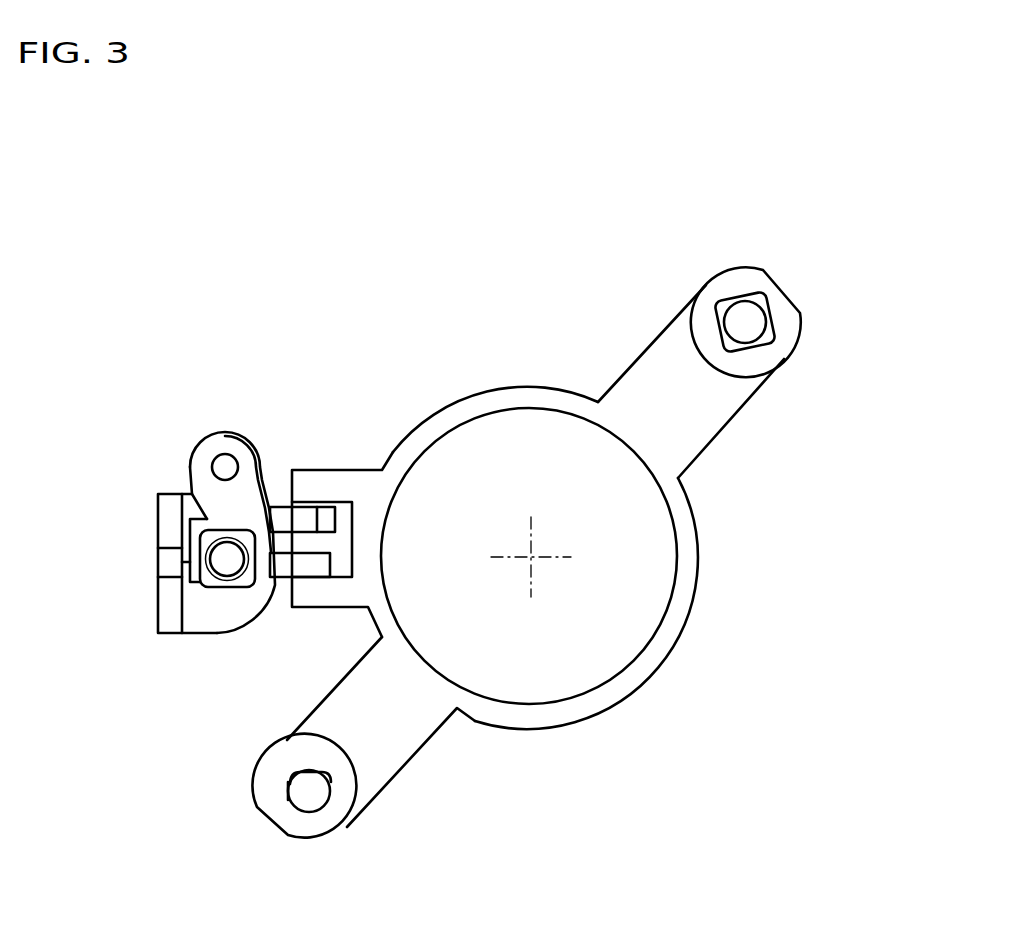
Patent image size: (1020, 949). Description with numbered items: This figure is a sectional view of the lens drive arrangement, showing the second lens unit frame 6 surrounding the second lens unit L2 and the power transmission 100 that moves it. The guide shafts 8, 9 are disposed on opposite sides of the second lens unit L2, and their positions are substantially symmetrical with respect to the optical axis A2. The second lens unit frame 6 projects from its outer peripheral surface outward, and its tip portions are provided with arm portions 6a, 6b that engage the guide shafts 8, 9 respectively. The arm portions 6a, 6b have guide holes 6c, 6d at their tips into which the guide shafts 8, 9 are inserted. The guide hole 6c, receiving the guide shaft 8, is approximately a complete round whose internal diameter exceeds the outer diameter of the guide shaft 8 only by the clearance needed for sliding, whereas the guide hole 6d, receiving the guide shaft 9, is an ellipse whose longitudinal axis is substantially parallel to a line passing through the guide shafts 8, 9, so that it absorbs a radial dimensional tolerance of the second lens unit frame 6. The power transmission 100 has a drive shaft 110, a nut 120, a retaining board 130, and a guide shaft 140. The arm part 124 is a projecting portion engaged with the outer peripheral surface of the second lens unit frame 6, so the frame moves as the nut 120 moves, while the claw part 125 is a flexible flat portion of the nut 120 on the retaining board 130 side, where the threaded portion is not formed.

The power transmission 100 is at (122, 393).
The second lens unit frame 6 is at (438, 418).
The arm portion 6a is at (410, 752).
The arm portion 6b is at (717, 421).
The guide hole 6c is at (292, 780).
The guide hole 6d is at (773, 309).
The guide shaft 8 is at (310, 797).
The guide shaft 9 is at (745, 322).
The drive shaft 110 is at (222, 580).
The nut 120 is at (255, 488).
The arm part 124 is at (313, 568).
The claw part 125 is at (192, 583).
The retaining board 130 is at (163, 514).
The guide shaft 140 is at (225, 467).
The second lens unit L2 is at (607, 532).
The optical axis A2 is at (538, 564).